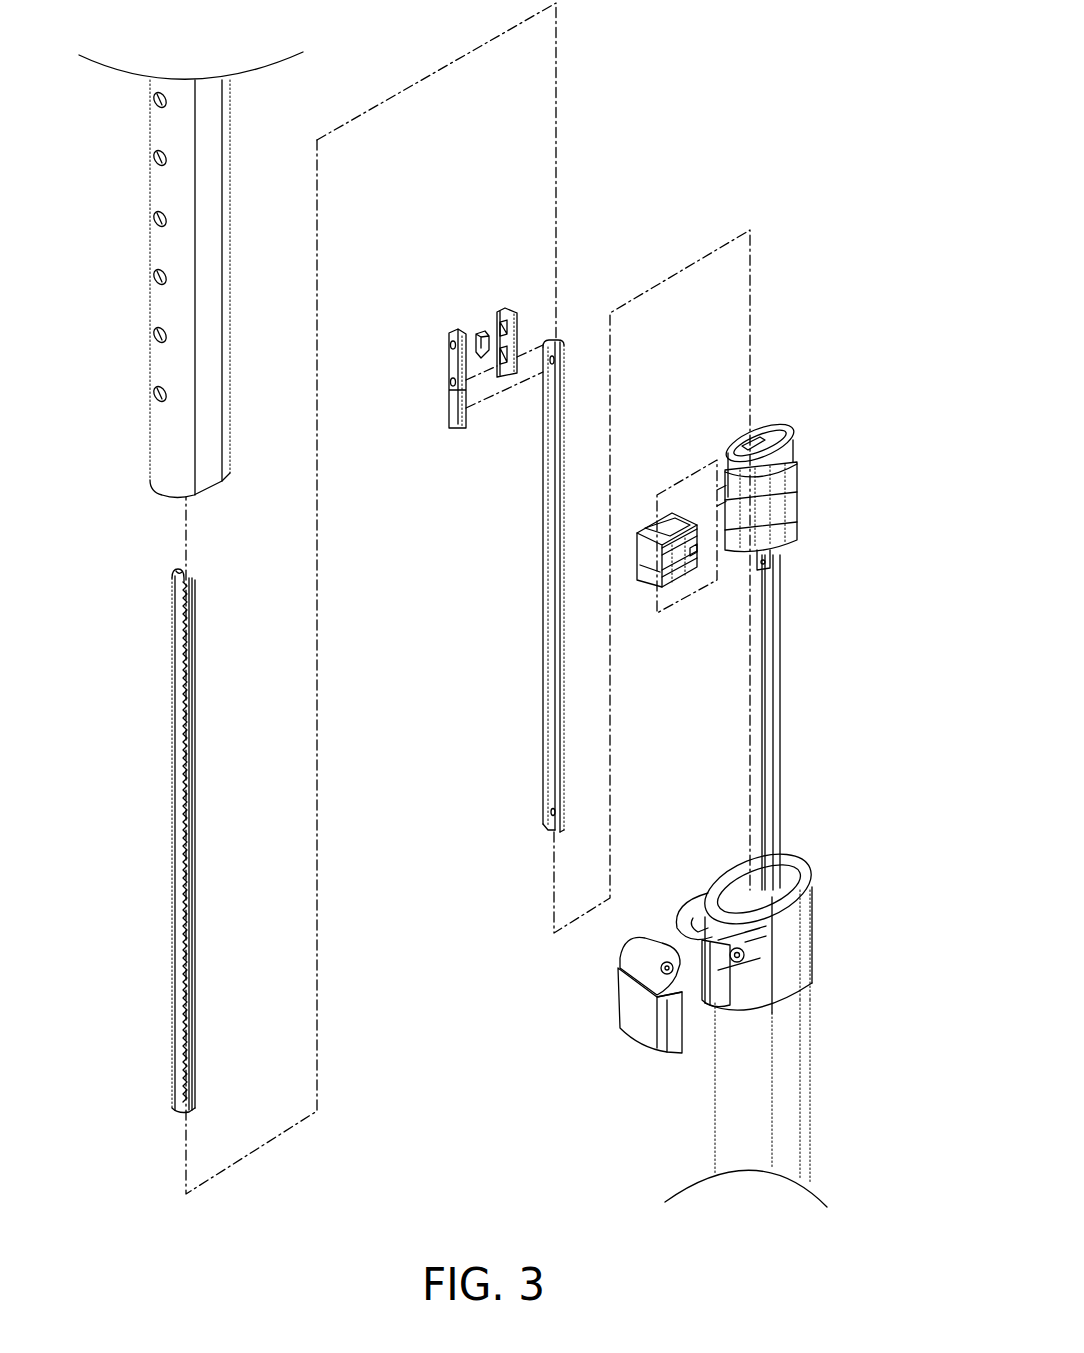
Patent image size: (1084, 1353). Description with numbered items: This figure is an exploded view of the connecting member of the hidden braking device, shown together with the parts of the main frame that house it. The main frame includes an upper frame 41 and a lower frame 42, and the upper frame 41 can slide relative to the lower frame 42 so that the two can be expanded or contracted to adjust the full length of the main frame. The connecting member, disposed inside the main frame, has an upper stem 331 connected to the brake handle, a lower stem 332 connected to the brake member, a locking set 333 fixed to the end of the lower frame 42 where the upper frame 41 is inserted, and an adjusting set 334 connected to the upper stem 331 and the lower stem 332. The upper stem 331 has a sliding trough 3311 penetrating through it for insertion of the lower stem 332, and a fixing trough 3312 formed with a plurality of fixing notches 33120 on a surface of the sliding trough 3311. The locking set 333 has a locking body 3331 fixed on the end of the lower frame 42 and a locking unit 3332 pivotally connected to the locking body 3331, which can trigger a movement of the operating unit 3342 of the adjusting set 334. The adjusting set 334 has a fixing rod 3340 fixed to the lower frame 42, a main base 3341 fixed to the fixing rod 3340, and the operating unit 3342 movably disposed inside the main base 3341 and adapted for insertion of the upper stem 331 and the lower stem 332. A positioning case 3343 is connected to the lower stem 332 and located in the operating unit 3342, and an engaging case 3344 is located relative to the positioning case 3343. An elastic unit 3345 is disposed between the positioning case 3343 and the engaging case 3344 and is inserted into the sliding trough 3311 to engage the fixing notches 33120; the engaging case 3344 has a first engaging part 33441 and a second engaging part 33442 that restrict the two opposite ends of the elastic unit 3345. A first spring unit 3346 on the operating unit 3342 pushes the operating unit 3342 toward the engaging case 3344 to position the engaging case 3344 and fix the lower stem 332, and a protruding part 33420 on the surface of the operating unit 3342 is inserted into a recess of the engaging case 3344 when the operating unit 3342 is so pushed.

The upper frame 41 is at (162, 256).
The lower frame 42 is at (733, 1115).
The upper stem 331 is at (126, 820).
The sliding trough 3311 is at (176, 571).
The fixing trough 3312 is at (126, 820).
The fixing notches 33120 is at (183, 652).
The lower stem 332 is at (553, 748).
The locking set 333 is at (765, 961).
The locking body 3331 is at (790, 968).
The locking unit 3332 is at (632, 1042).
The adjusting set 334 is at (640, 545).
The fixing rod 3340 is at (782, 660).
The main base 3341 is at (800, 487).
The operating unit 3342 is at (690, 544).
The protruding part 33420 is at (650, 580).
The positioning case 3343 is at (453, 365).
The engaging case 3344 is at (558, 288).
The first engaging part 33441 is at (502, 333).
The second engaging part 33442 is at (500, 353).
The elastic unit 3345 is at (483, 332).
The first spring unit 3346 is at (696, 550).